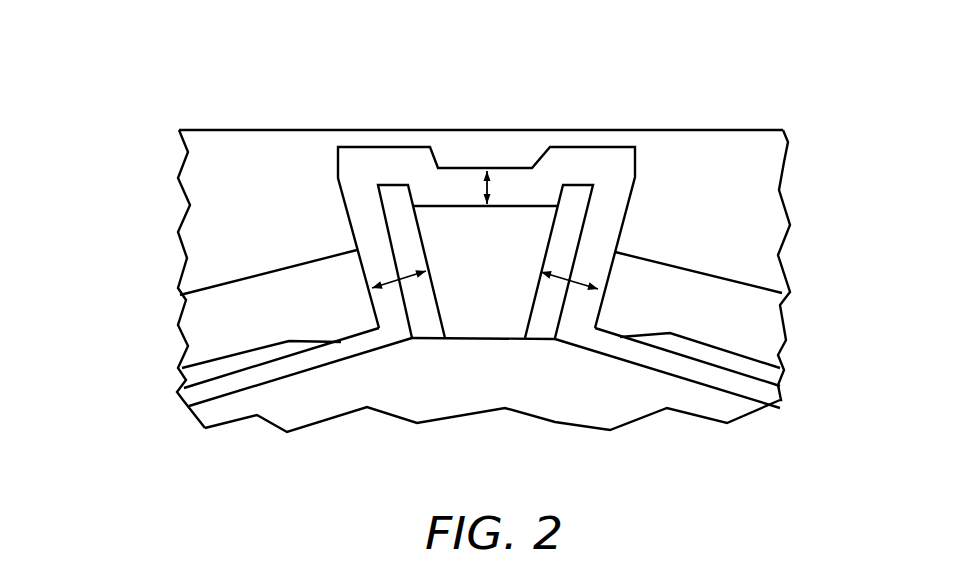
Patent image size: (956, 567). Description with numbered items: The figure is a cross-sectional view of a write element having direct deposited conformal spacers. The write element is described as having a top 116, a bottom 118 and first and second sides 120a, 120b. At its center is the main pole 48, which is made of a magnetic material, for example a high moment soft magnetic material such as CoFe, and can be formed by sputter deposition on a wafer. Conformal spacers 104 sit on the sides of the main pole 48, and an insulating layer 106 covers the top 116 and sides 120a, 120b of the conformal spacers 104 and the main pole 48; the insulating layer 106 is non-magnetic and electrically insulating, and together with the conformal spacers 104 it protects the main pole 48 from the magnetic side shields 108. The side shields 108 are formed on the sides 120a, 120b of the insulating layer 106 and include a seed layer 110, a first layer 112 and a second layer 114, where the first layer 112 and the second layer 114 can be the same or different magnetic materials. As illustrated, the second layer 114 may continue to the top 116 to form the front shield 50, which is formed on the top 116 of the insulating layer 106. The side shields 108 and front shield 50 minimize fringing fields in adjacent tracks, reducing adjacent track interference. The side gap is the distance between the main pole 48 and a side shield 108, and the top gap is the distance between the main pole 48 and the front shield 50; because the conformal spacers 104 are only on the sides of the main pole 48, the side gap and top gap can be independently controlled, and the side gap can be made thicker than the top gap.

The main pole 48 is at (480, 325).
The front shield 50 is at (468, 128).
The conformal spacers 104 is at (425, 337).
The insulating layer 106 is at (357, 158).
The side shields 108 is at (143, 268).
The seed layer 110 is at (177, 375).
The first layer 112 is at (180, 318).
The second layer 114 is at (200, 174).
The top 116 is at (412, 128).
The bottom 118 is at (603, 405).
The first side 120a is at (163, 220).
The second side 120b is at (802, 204).